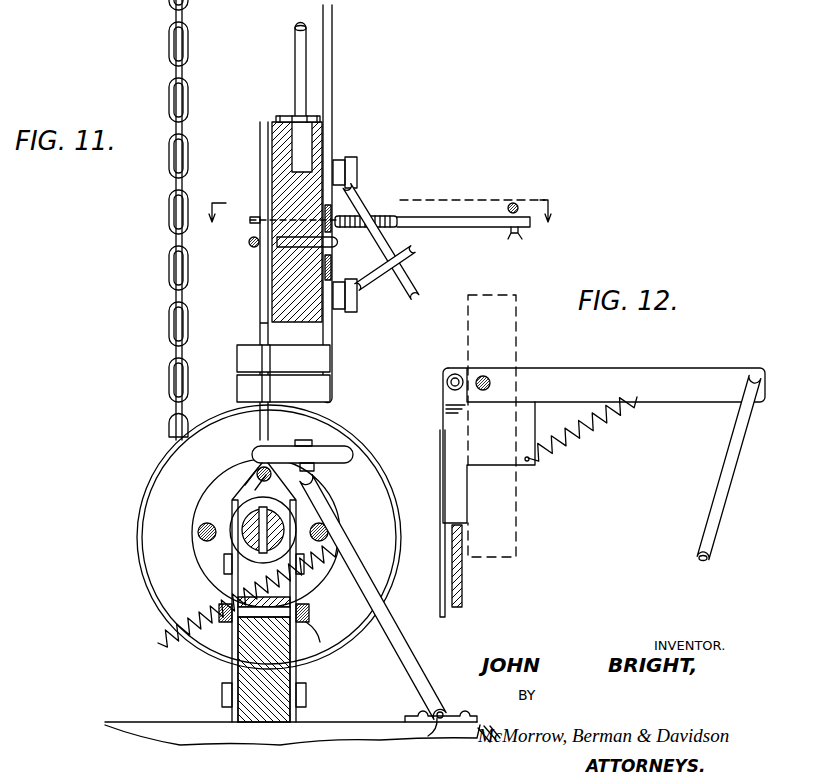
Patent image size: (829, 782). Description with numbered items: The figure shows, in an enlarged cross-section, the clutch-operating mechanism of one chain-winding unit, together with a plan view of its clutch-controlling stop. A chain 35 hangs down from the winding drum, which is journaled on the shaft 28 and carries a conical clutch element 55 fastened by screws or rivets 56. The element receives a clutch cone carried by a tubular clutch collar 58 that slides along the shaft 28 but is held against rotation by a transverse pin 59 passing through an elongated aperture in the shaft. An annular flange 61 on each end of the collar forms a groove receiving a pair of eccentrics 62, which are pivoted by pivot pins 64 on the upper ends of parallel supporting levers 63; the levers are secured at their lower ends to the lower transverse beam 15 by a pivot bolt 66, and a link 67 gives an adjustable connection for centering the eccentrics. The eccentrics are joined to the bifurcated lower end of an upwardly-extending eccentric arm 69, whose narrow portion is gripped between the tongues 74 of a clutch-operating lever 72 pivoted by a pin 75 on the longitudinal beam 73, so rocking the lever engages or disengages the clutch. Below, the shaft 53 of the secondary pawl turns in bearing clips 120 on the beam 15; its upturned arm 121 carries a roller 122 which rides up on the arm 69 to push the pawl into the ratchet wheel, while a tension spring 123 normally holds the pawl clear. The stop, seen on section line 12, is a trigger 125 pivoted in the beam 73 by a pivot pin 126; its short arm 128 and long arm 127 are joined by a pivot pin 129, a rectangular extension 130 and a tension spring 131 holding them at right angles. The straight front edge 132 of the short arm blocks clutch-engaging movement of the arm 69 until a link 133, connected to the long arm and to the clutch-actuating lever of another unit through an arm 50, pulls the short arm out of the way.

In FIG. 11, the section line 12— 12 is at (391, 211).
In FIG. 11, the lower transverse beam 15 is at (358, 728).
In FIG. 11, the shaft 28 is at (255, 578).
In FIG. 11, the chain 35 is at (163, 265).
In FIG. 11, the arm 50 is at (410, 291).
In FIG. 11, the shaft 53 is at (430, 735).
In FIG. 11, the conical clutch element 55 is at (140, 566).
In FIG. 11, the screws or rivets 56 is at (198, 532).
In FIG. 11, the tubular clutch collar 58 is at (242, 490).
In FIG. 11, the transverse pin 59 is at (244, 512).
In FIG. 11, the annular flange 61 is at (236, 522).
In FIG. 11, the eccentrics 62 is at (238, 517).
In FIG. 11, the supporting levers 63 is at (270, 682).
In FIG. 11, the pivot pins 64 is at (228, 566).
In FIG. 11, the pivot pin or bolt 66 is at (222, 694).
In FIG. 11, the link 67 is at (332, 637).
In FIG. 11, the eccentric arm 69 is at (262, 311).
In FIG. 12, the eccentric arm 69 is at (463, 585).
In FIG. 11, the clutch-operating lever 72 is at (352, 139).
In FIG. 11, the longitudinally-extending beam 73 is at (282, 283).
In FIG. 12, the longitudinally-extending beam 73 is at (487, 326).
In FIG. 11, the tongues 74 is at (246, 390).
In FIG. 11, the pivot pin 75 is at (338, 243).
In FIG. 11, the bearing clips 120 is at (452, 708).
In FIG. 11, the arm 121 is at (397, 653).
In FIG. 11, the wheel or roller 122 is at (330, 440).
In FIG. 11, the tension spring 123 is at (158, 643).
In FIG. 11, the trigger 125 is at (514, 205).
In FIG. 12, the trigger 125 is at (568, 368).
In FIG. 12, the pivot pin 126 is at (481, 375).
In FIG. 12, the long arm 127 is at (690, 368).
In FIG. 12, the short arm 128 is at (447, 483).
In FIG. 12, the pivot pin 129 is at (447, 381).
In FIG. 12, the rectangular extension 130 is at (537, 420).
In FIG. 11, the tension spring 131 is at (365, 216).
In FIG. 12, the tension spring 131 is at (586, 444).
In FIG. 12, the straight front edge 132 is at (441, 531).
In FIG. 11, the link 133 is at (381, 266).
In FIG. 12, the link 133 is at (720, 456).